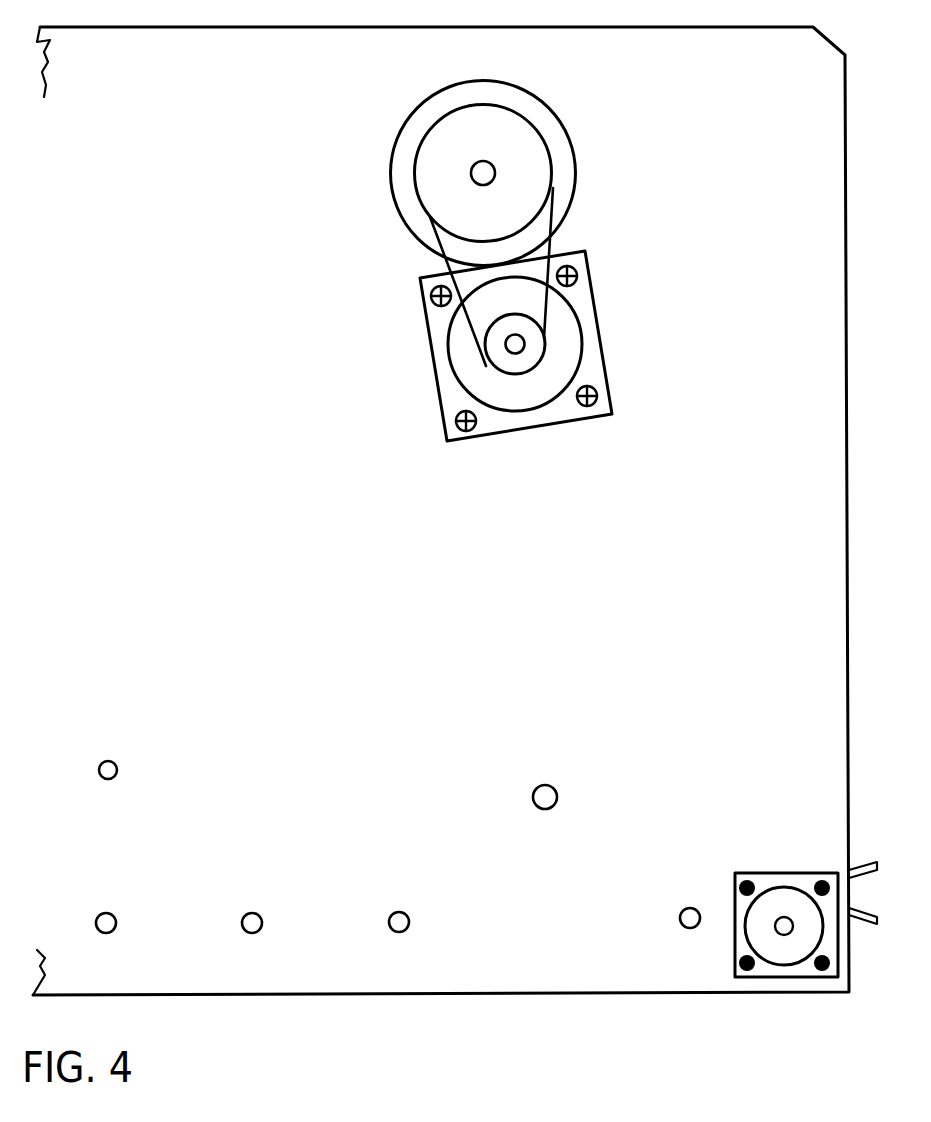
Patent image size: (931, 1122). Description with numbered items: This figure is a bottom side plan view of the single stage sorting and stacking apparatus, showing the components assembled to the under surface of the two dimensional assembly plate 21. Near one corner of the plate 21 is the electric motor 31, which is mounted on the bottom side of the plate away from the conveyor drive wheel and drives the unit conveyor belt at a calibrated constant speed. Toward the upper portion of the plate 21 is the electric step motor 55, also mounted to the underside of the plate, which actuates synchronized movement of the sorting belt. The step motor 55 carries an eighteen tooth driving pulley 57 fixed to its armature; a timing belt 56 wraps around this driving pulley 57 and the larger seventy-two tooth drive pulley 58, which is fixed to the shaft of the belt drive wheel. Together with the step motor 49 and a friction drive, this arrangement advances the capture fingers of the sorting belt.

The assembly plate 21 is at (847, 490).
The electric motor 31 is at (780, 895).
The electric step motor 49 is at (575, 353).
The electric step motor 55 is at (438, 335).
The timing belt 56 is at (447, 265).
The driving pulley 57 is at (508, 365).
The drive pulley 58 is at (433, 155).